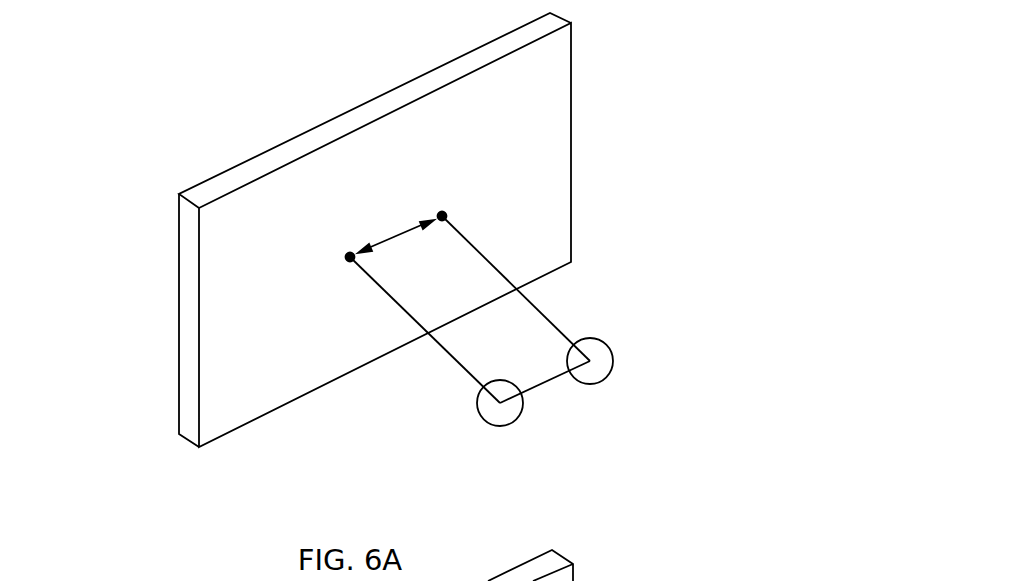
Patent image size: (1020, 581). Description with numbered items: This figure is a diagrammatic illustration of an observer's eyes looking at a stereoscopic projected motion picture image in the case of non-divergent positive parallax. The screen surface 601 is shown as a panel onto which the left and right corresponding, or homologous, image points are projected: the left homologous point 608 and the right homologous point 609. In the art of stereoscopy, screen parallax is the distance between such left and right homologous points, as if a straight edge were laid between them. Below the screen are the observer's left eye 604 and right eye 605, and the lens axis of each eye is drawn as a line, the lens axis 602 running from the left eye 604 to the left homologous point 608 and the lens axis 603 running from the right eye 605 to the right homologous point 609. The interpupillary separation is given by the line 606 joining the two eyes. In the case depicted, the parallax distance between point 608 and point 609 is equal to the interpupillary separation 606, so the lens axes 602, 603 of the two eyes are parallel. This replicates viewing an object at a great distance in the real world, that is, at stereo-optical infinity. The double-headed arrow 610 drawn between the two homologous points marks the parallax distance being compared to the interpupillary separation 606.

The screen surface 601 is at (468, 98).
The lens axis of left eye 602 is at (448, 362).
The lens axis of right eye 603 is at (550, 312).
The left eye 604 is at (527, 405).
The right eye 605 is at (622, 362).
The interpupillary separation 606 is at (543, 387).
The left homologous point 608 is at (352, 248).
The right homologous point 609 is at (443, 200).
The pinch gesture direction arrow 610 is at (393, 230).